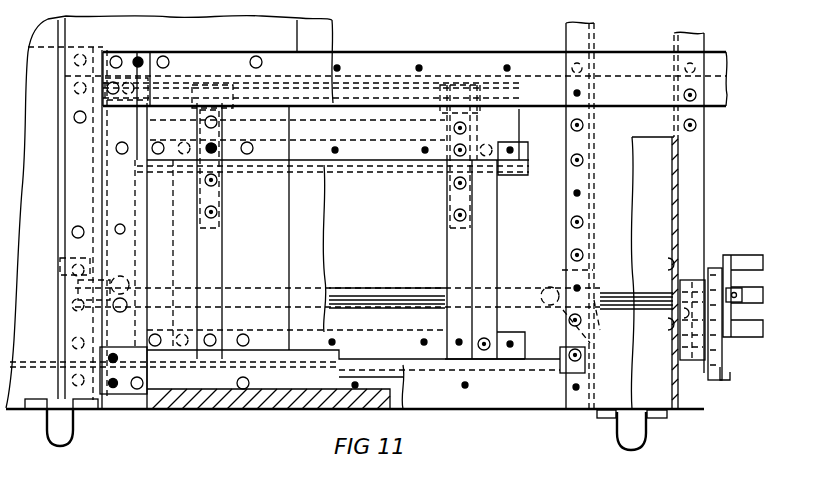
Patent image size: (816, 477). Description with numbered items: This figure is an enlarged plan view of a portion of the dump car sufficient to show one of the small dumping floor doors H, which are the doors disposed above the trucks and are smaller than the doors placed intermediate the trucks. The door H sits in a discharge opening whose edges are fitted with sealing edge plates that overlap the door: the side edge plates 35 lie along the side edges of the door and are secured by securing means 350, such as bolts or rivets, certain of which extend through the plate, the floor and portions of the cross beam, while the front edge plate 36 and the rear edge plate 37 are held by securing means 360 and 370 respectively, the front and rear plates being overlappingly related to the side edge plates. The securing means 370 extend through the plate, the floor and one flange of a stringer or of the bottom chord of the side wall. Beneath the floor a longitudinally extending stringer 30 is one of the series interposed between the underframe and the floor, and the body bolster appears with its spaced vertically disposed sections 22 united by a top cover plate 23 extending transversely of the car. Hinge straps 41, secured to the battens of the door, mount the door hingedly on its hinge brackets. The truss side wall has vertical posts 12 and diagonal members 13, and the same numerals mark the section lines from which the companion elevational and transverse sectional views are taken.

The vertical posts 12 is at (762, 359).
The diagonal members 13 is at (309, 435).
The vertically disposed sections 22 is at (594, 215).
The top cover plate 23 is at (612, 182).
The stringer 30 is at (549, 100).
The side edge plates 35 is at (128, 257).
The securing means 350 is at (121, 224).
The front edge plate 36 is at (255, 350).
The securing means 360 is at (241, 389).
The rear edge plate 37 is at (311, 61).
The securing means 370 is at (250, 62).
The hinge straps 41 is at (222, 222).
The small dumping floor doors H is at (256, 246).